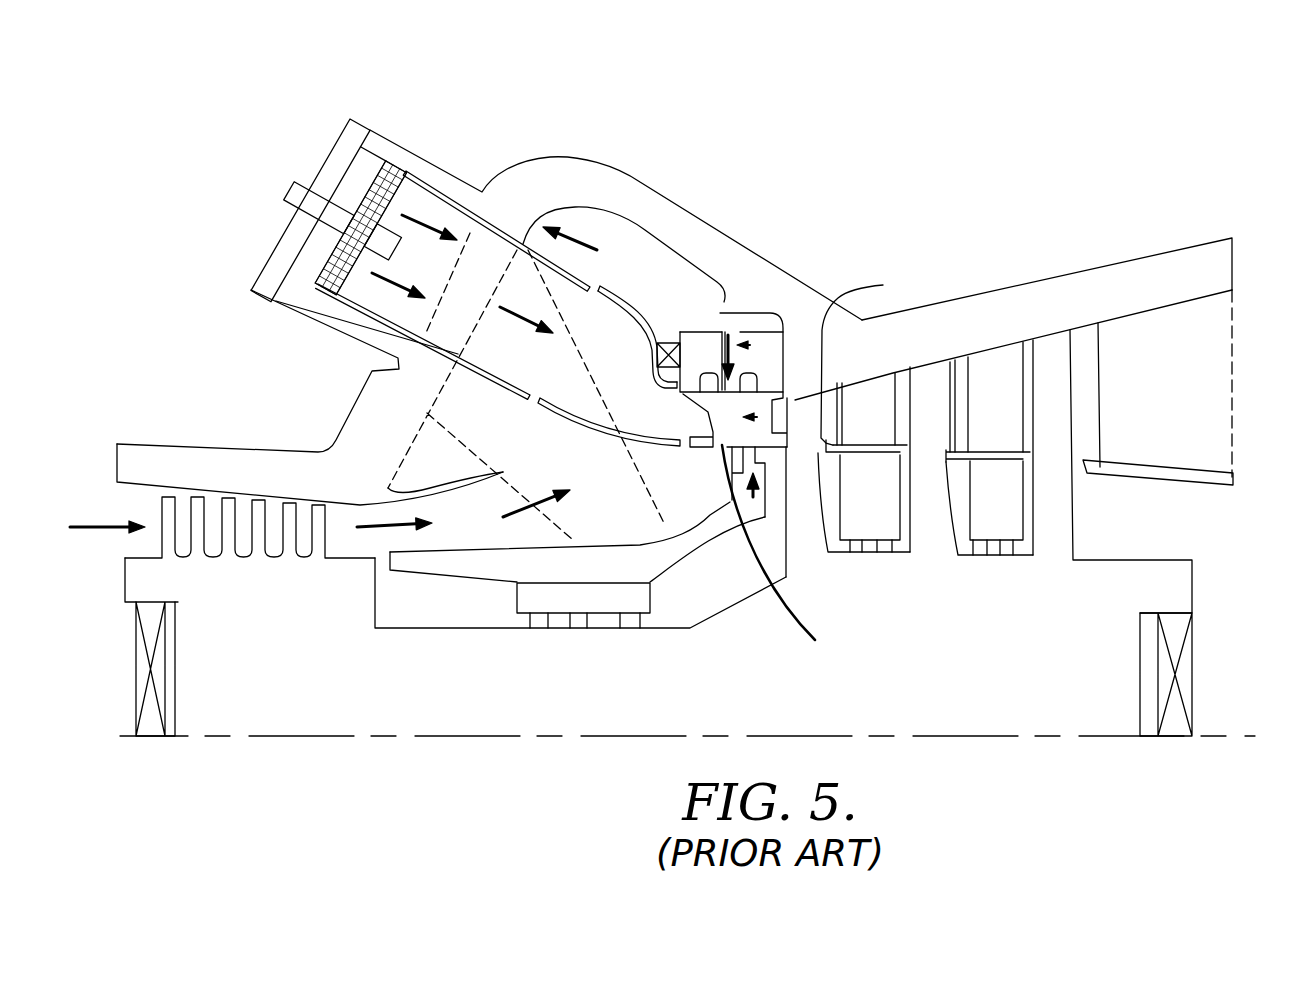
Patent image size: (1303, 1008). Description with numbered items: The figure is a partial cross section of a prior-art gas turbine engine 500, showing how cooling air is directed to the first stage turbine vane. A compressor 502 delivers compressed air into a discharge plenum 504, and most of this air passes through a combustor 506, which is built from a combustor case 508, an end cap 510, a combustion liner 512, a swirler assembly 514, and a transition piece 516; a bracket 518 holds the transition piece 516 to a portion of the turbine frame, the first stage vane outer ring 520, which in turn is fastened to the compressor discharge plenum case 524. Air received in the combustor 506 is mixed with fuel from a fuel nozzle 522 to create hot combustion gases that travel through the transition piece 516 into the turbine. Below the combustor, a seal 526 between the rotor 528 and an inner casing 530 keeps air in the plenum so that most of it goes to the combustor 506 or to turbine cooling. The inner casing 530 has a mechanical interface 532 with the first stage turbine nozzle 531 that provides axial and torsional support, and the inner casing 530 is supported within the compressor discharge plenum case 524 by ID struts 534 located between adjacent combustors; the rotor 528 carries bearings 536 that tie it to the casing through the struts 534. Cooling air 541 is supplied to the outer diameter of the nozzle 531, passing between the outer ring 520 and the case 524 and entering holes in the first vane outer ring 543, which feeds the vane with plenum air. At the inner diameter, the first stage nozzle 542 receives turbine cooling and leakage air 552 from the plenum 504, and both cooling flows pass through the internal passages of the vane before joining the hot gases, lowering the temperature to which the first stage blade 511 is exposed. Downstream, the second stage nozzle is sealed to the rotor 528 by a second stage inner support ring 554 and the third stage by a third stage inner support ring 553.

The gas turbine engine 500 is at (1057, 138).
The compressor 502 is at (212, 512).
The discharge plenum 504 is at (526, 386).
The combustor 506 is at (414, 256).
The combustor case 508 is at (384, 118).
The end cap 510 is at (331, 119).
The first stage blade 511 is at (820, 411).
The combustion liner 512 is at (467, 188).
The swirler assembly 514 is at (410, 165).
The transition piece 516 is at (627, 290).
The bracket 518 is at (670, 327).
The first stage vane outer ring 520 is at (788, 350).
The fuel nozzle 522 is at (272, 187).
The compressor discharge plenum case 524 is at (708, 238).
The seal 526 is at (652, 619).
The rotor 528 is at (679, 503).
The inner casing 530 is at (708, 553).
The first stage turbine nozzle 531 is at (871, 361).
The mechanical interface 532 is at (765, 517).
The ID struts 534 is at (592, 525).
The bearings 536 is at (124, 698).
The cooling air 541 is at (716, 322).
The first stage nozzle 542 is at (792, 553).
The first vane outer ring 543 is at (752, 313).
The turbine cooling and leakage air 552 is at (718, 453).
The third stage inner support ring 553 is at (989, 447).
The second stage inner support ring 554 is at (864, 459).